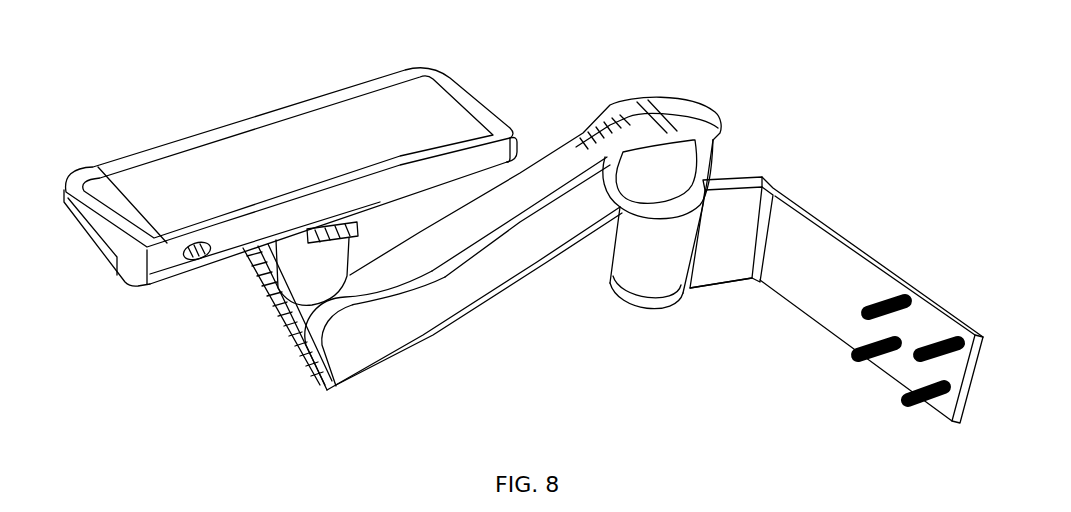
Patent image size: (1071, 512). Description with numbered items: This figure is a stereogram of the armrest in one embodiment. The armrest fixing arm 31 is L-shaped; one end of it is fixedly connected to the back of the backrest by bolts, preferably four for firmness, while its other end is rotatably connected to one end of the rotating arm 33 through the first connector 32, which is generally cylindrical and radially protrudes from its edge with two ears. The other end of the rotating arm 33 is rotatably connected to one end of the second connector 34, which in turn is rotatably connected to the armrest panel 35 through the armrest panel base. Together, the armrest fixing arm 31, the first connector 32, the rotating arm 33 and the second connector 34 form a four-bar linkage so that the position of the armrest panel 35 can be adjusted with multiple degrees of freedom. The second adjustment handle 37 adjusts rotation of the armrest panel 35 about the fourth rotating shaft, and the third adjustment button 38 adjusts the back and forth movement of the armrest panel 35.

The armrest fixing arm 31 is at (787, 298).
The first connector 32 is at (721, 152).
The rotating arm 33 is at (510, 290).
The second connector 34 is at (277, 317).
The armrest panel 35 is at (248, 120).
The second adjustment handle 37 is at (352, 240).
The third adjustment button 38 is at (200, 263).